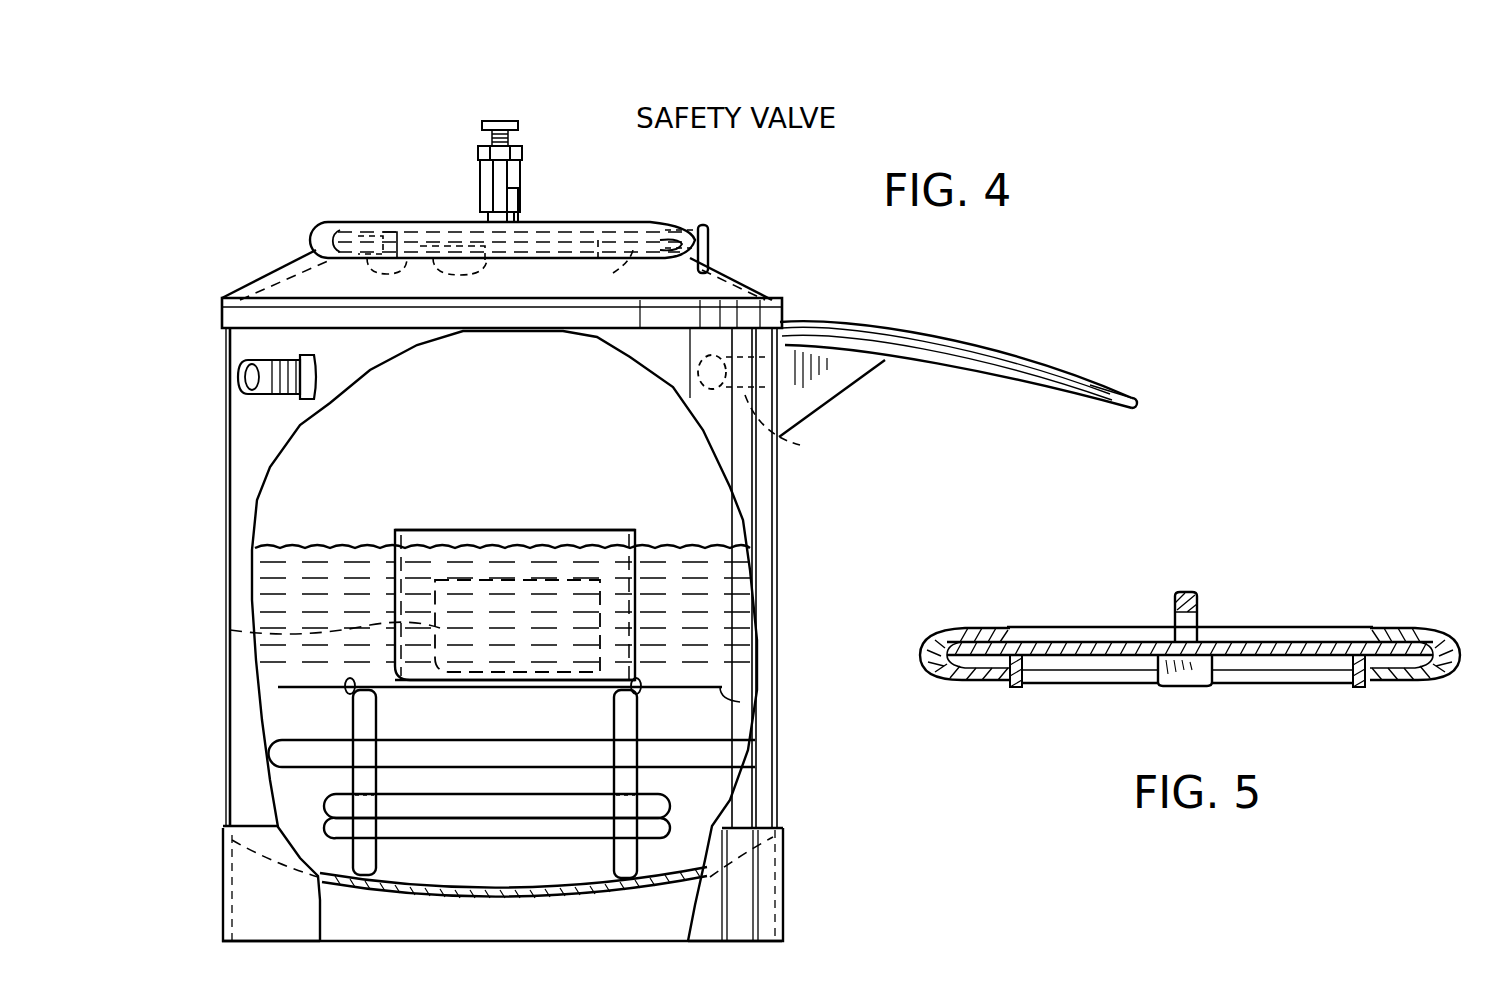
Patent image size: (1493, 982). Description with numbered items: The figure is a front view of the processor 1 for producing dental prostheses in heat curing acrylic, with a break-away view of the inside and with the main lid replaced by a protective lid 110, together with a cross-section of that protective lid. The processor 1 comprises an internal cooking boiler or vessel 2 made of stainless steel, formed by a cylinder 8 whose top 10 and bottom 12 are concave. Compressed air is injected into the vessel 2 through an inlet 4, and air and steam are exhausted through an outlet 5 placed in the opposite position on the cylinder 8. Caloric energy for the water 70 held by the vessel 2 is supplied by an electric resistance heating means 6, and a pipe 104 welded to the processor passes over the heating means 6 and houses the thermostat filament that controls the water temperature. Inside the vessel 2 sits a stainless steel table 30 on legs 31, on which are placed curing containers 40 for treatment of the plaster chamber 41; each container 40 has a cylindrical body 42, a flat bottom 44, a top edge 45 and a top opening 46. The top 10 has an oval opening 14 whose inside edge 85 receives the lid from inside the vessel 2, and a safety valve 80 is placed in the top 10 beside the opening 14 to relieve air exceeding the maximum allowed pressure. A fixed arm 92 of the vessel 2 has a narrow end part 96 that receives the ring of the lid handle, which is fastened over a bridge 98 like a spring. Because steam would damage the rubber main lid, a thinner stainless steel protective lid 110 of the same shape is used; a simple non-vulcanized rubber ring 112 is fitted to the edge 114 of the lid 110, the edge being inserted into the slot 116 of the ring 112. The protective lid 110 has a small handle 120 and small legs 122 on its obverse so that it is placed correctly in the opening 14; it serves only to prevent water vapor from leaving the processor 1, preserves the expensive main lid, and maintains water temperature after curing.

In FIG. 4, the processor 1 is at (210, 469).
In FIG. 4, the internal cooking boiler 2 is at (264, 478).
In FIG. 4, the inlet 4 is at (800, 445).
In FIG. 4, the outlet 5 is at (290, 395).
In FIG. 4, the electric resistance heating means 6 is at (326, 800).
In FIG. 4, the cylinder 8 is at (226, 556).
In FIG. 4, the top 10 is at (280, 282).
In FIG. 4, the bottom 12 is at (343, 879).
In FIG. 4, the oval opening 14 is at (397, 232).
In FIG. 4, the table 30 is at (740, 702).
In FIG. 4, the legs 31 is at (350, 713).
In FIG. 4, the curing containers 40 is at (640, 530).
In FIG. 4, the plaster chamber 41 is at (230, 630).
In FIG. 4, the cylindrical body 42 is at (640, 598).
In FIG. 4, the flat bottom 44 is at (535, 686).
In FIG. 4, the top edge 45 is at (560, 530).
In FIG. 4, the top opening 46 is at (480, 530).
In FIG. 4, the water 70 is at (330, 545).
In FIG. 4, the safety valve 80 is at (520, 126).
In FIG. 4, the inside edge 85 is at (383, 236).
In FIG. 4, the fixed arm 92 is at (940, 338).
In FIG. 4, the narrow end part 96 is at (1122, 394).
In FIG. 4, the bridge 98 is at (712, 243).
In FIG. 4, the pipe 104 is at (735, 735).
In FIG. 4, the protective lid 110 is at (614, 224).
In FIG. 5, the protective lid 110 is at (1048, 630).
In FIG. 4, the non-vulcanized rubber ring 112 is at (330, 233).
In FIG. 5, the non-vulcanized rubber ring 112 is at (1105, 627).
In FIG. 4, the edge 114 is at (332, 243).
In FIG. 4, the slot 116 is at (712, 233).
In FIG. 5, the slot 116 is at (945, 635).
In FIG. 4, the small handle 120 is at (520, 198).
In FIG. 5, the small handle 120 is at (1197, 596).
In FIG. 4, the small legs 122 is at (413, 232).
In FIG. 5, the small legs 122 is at (1012, 688).